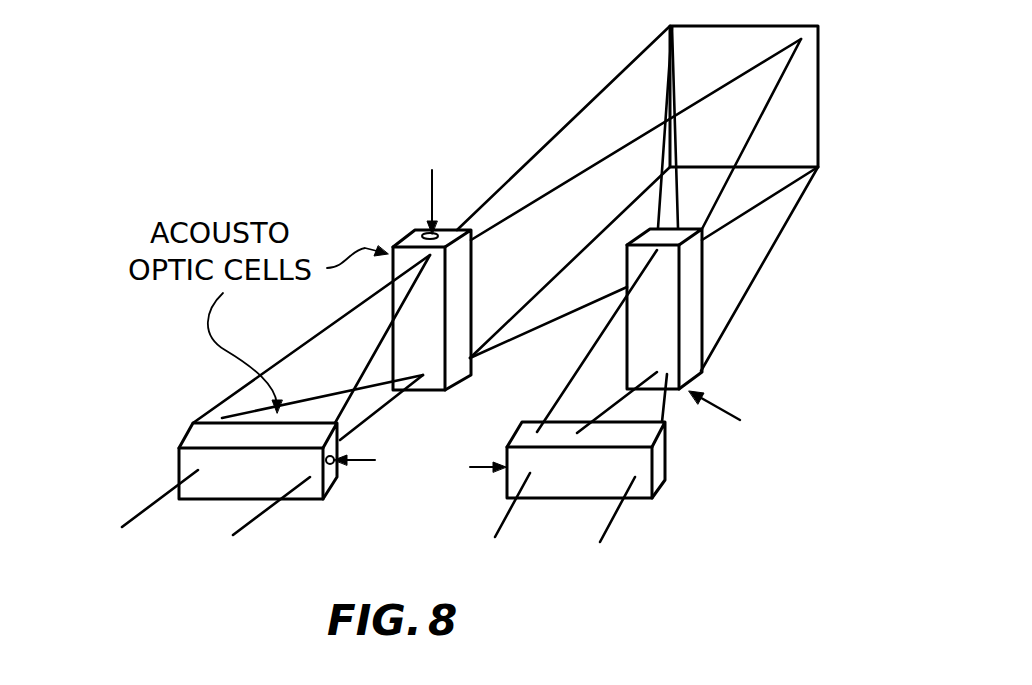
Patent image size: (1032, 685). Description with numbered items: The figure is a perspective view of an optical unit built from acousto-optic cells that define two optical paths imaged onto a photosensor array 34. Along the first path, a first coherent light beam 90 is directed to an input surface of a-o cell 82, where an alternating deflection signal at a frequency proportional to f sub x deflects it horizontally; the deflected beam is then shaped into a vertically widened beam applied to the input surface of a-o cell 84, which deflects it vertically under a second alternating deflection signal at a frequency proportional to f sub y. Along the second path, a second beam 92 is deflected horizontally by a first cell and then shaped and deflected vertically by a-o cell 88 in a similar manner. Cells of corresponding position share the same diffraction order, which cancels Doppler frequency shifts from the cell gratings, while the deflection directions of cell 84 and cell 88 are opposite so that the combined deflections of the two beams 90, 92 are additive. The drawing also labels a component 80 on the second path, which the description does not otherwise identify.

The photosensor array 34 is at (818, 113).
The cylindrical lens 80 is at (663, 458).
The a-o cell 82 is at (177, 460).
The a-o cell 84 is at (457, 293).
The a-o cell 88 is at (693, 340).
The first coherent light beam 90 is at (183, 523).
The second beam 92 is at (542, 518).